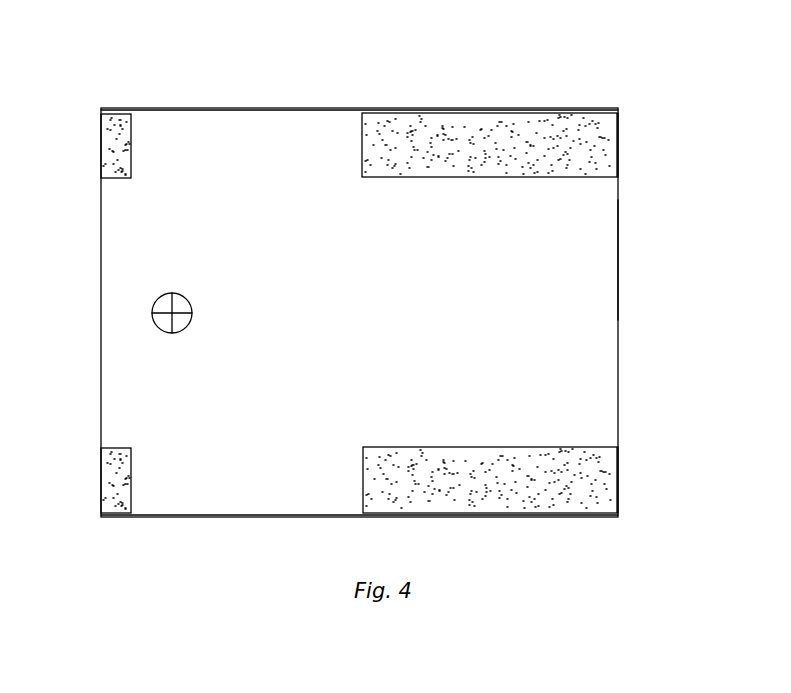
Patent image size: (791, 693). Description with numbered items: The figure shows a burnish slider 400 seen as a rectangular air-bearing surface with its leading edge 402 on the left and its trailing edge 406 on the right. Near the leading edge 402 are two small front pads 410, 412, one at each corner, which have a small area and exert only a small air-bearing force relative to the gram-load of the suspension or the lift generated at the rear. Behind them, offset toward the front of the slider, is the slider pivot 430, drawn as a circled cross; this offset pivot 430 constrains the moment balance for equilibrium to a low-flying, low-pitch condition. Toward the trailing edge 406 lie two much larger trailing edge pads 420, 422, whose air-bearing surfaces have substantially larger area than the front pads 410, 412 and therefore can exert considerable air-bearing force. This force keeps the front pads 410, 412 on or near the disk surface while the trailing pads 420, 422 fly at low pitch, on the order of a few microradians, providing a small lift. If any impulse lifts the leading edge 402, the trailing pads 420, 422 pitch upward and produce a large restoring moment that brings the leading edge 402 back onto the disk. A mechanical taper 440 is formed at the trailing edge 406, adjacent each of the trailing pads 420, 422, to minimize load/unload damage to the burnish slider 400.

The burnish slider 400 is at (325, 60).
The leading edge 402 is at (100, 307).
The trailing edge 406 is at (618, 260).
The front pad 410 is at (102, 160).
The front pad 412 is at (102, 478).
The trailing edge pad 420 is at (527, 113).
The trailing edge pad 422 is at (528, 447).
The slider pivot 430 is at (182, 292).
The mechanical taper 440 is at (618, 140).